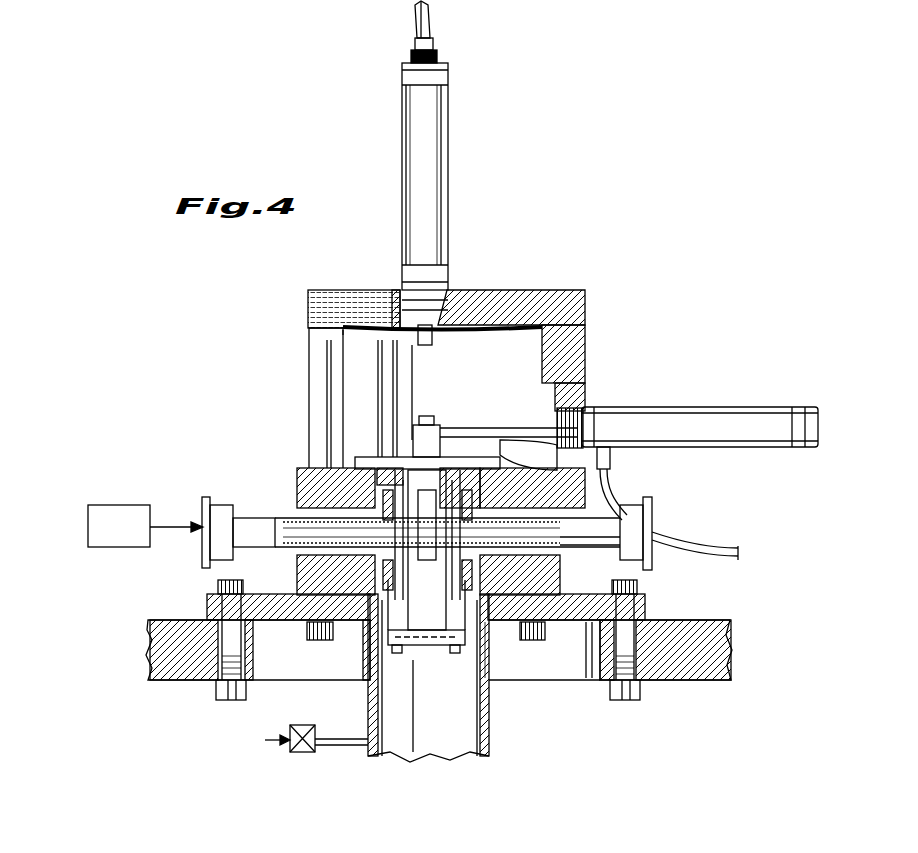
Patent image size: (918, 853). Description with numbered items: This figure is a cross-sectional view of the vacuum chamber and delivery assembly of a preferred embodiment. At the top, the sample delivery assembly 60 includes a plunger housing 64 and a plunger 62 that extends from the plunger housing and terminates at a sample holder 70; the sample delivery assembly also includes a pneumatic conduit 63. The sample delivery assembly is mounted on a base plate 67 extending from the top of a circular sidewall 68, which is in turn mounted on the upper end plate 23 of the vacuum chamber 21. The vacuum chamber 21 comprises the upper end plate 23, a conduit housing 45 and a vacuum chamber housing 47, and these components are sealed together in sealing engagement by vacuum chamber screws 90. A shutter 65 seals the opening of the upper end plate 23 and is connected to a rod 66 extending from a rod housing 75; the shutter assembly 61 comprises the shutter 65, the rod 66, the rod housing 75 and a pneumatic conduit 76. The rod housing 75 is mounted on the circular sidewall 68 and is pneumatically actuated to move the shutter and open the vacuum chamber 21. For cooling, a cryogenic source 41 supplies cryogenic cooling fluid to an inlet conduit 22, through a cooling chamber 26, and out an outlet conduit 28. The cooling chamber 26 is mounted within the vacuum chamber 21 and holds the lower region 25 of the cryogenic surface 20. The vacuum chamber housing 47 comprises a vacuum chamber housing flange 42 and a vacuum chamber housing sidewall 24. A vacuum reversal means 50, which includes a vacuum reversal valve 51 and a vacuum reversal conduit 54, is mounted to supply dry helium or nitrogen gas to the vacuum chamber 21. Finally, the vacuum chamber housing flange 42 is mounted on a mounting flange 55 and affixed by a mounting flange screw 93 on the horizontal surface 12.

The horizontal surface 12 is at (692, 675).
The cryogenic surface 20 is at (393, 472).
The vacuum chamber 21 is at (444, 727).
The inlet conduit 22 is at (377, 510).
The upper end plate 23 is at (592, 493).
The vacuum chamber housing sidewall 24 is at (490, 738).
The lower region 25 is at (437, 590).
The cooling chamber 26 is at (428, 607).
The outlet conduit 28 is at (612, 530).
The cryogenic source 41 is at (130, 539).
The vacuum chamber housing flange 42 is at (552, 590).
The conduit housing 45 is at (297, 512).
The vacuum chamber housing 47 is at (498, 660).
The vacuum reversal means 50 is at (266, 740).
The vacuum reversal valve 51 is at (305, 752).
The vacuum reversal conduit 54 is at (333, 738).
The mounting flange 55 is at (650, 604).
The sample delivery assembly 60 is at (458, 152).
The shutter assembly 61 is at (760, 402).
The plunger 62 is at (440, 330).
The pneumatic conduit 63 is at (432, 30).
The plunger housing 64 is at (427, 213).
The shutter 65 is at (382, 462).
The rod 66 is at (478, 427).
The base plate 67 is at (530, 291).
The circular sidewall 68 is at (322, 352).
The sample holder 70 is at (418, 350).
The rod housing 75 is at (673, 413).
The pneumatic conduit 76 is at (725, 553).
The vacuum chamber screws 90 is at (538, 638).
The mounting flange screw 93 is at (753, 588).